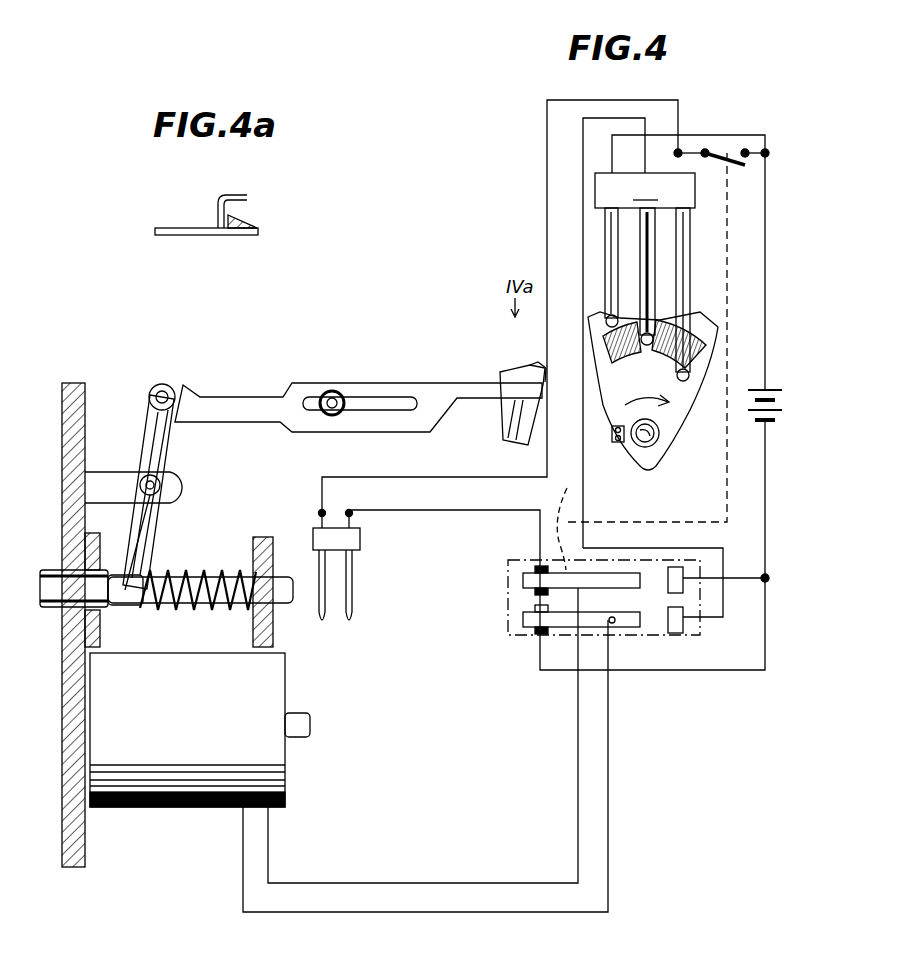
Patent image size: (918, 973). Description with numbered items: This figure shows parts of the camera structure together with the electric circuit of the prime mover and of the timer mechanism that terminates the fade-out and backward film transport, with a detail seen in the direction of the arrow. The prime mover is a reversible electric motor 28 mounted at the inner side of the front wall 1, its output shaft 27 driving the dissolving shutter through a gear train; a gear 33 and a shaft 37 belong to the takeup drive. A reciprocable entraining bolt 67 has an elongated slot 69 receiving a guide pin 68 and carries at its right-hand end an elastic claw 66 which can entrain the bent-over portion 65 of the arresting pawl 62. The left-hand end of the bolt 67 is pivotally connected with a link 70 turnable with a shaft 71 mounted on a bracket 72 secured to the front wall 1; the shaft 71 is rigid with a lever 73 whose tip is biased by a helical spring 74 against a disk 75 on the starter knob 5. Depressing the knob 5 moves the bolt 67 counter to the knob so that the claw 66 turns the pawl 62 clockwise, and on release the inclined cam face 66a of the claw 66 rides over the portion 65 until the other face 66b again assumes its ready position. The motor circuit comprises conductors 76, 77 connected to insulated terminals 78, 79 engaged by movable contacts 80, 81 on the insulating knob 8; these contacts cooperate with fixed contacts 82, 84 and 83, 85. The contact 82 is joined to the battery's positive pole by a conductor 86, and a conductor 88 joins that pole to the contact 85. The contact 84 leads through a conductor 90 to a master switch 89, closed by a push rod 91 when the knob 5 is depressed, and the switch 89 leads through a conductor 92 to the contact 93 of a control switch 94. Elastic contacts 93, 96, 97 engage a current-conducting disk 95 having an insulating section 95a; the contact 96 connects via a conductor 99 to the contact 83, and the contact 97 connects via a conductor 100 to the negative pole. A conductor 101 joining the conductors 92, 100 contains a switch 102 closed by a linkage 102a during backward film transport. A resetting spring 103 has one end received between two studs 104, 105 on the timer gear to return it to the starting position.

In FIG. 4, the front wall 1 is at (73, 383).
In FIG. 4, the starter knob 5 is at (62, 608).
In FIG. 4, the knob 8 is at (566, 648).
In FIG. 4, the output shaft 27 is at (300, 716).
In FIG. 4, the reversible electric motor 28 is at (165, 809).
In FIG. 4, the gear 33 is at (660, 434).
In FIG. 4, the shaft 37 is at (778, 421).
In FIG. 4, the arresting pawl 62 is at (505, 440).
In FIG. 4, the bent-over portion 65 is at (500, 402).
In FIG. 4a, the bent-over portion 65 is at (218, 212).
In FIG. 4, the elastic claw 66 is at (528, 376).
In FIG. 4a, the elastic claw 66 is at (250, 220).
In FIG. 4a, the inclined cam face 66a is at (258, 225).
In FIG. 4a, the other face 66b is at (240, 236).
In FIG. 4, the entraining bolt 67 is at (425, 388).
In FIG. 4a, the entraining bolt 67 is at (182, 235).
In FIG. 4, the guide pin 68 is at (332, 392).
In FIG. 4, the elongated slot 69 is at (370, 412).
In FIG. 4, the link 70 is at (170, 432).
In FIG. 4, the shaft 71 is at (165, 486).
In FIG. 4, the bracket 72 is at (95, 472).
In FIG. 4, the lever 73 is at (150, 535).
In FIG. 4, the helical spring 74 is at (214, 580).
In FIG. 4, the disk 75 is at (112, 605).
In FIG. 4, the conductor 76 is at (388, 912).
In FIG. 4, the conductor 77 is at (418, 883).
In FIG. 4, the insulated terminal 78 is at (612, 626).
In FIG. 4, the insulated terminal 79 is at (562, 528).
In FIG. 4, the movable contact 80 is at (523, 620).
In FIG. 4, the movable contact 81 is at (523, 580).
In FIG. 4, the fixed contact 82 is at (538, 634).
In FIG. 4, the fixed contact 83 is at (685, 633).
In FIG. 4, the fixed contact 84 is at (540, 566).
In FIG. 4, the fixed contact 85 is at (685, 578).
In FIG. 4, the conductor 86 is at (735, 670).
In FIG. 4, the conductor 88 is at (750, 578).
In FIG. 4, the master switch 89 is at (315, 532).
In FIG. 4, the conductor 90 is at (405, 508).
In FIG. 4, the push rod 91 is at (280, 602).
In FIG. 4, the conductor 92 is at (547, 247).
In FIG. 4, the contact 93 is at (690, 215).
In FIG. 4, the control switch 94 is at (645, 190).
In FIG. 4, the current-conducting disk 95 is at (677, 405).
In FIG. 4, the insulating section 95a is at (620, 355).
In FIG. 4, the contact 96 is at (656, 275).
In FIG. 4, the contact 97 is at (608, 272).
In FIG. 4, the conductor 99 is at (583, 187).
In FIG. 4, the conductor 100 is at (768, 232).
In FIG. 4, the conductor 101 is at (690, 150).
In FIG. 4, the switch 102 is at (738, 150).
In FIG. 4, the linkage 102a is at (768, 282).
In FIG. 4, the resetting spring 103 is at (648, 468).
In FIG. 4, the stud 104 is at (630, 465).
In FIG. 4, the stud 105 is at (612, 432).